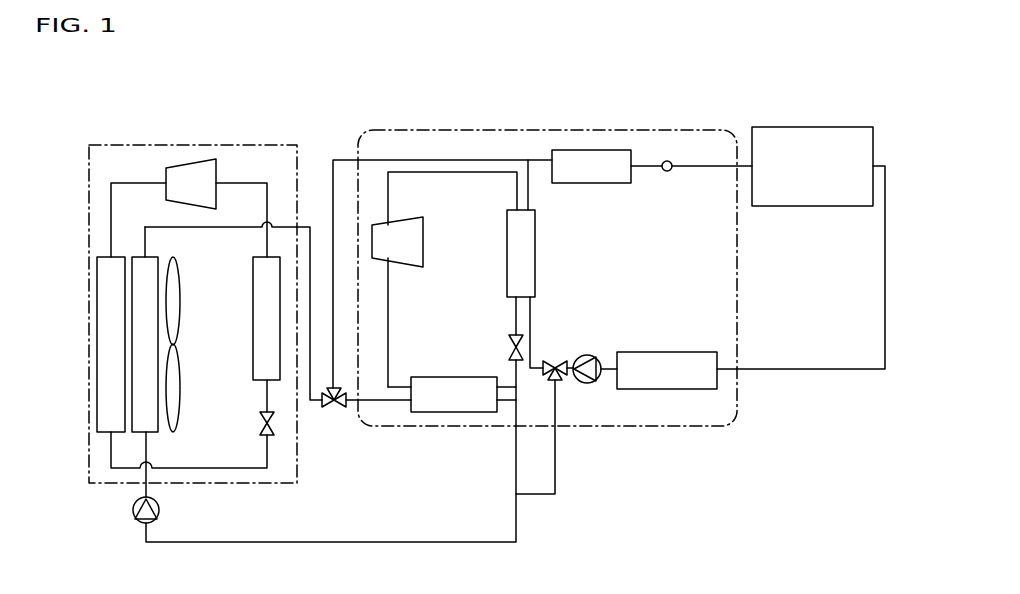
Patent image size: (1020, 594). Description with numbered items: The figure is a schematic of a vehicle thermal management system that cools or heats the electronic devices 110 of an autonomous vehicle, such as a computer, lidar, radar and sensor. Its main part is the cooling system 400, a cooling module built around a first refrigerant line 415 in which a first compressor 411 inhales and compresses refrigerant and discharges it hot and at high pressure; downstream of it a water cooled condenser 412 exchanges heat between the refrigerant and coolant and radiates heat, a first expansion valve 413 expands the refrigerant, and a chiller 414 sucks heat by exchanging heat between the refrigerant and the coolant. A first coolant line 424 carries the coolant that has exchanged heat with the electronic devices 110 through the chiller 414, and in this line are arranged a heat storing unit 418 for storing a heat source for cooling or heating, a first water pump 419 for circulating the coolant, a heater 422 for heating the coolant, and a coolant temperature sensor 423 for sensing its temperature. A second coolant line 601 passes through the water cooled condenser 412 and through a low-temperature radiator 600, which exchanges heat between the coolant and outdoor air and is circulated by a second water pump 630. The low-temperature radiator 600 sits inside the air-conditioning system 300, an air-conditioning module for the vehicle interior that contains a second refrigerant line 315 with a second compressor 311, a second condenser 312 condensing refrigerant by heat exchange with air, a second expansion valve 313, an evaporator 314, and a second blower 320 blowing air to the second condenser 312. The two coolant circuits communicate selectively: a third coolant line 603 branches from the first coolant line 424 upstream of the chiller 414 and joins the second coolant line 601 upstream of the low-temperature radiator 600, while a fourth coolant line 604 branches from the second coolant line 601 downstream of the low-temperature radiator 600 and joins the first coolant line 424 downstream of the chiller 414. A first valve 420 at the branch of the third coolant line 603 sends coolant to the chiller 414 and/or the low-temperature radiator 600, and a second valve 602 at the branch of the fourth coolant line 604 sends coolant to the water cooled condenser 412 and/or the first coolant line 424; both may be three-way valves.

The electronic devices 110 is at (815, 127).
The air-conditioning system 300 is at (243, 145).
The second compressor 311 is at (190, 165).
The second condenser 312 is at (102, 256).
The second expansion valve 313 is at (262, 432).
The evaporator 314 is at (252, 320).
The second refrigerant line 315 is at (262, 234).
The second blower 320 is at (180, 392).
The cooling system 400 is at (435, 130).
The first compressor 411 is at (400, 262).
The water cooled condenser 412 is at (452, 412).
The first expansion valve 413 is at (509, 347).
The chiller 414 is at (507, 255).
The first refrigerant line 415 is at (450, 172).
The heat storing unit 418 is at (668, 389).
The first water pump 419 is at (587, 384).
The first valve 420 is at (556, 360).
The heater 422 is at (591, 150).
The coolant temperature sensor 423 is at (667, 161).
The first coolant line 424 is at (770, 370).
The low-temperature radiator 600 is at (89, 483).
The second coolant line 601 is at (516, 514).
The second valve 602 is at (333, 410).
The third coolant line 603 is at (556, 482).
The fourth coolant line 604 is at (333, 205).
The second water pump 630 is at (139, 521).